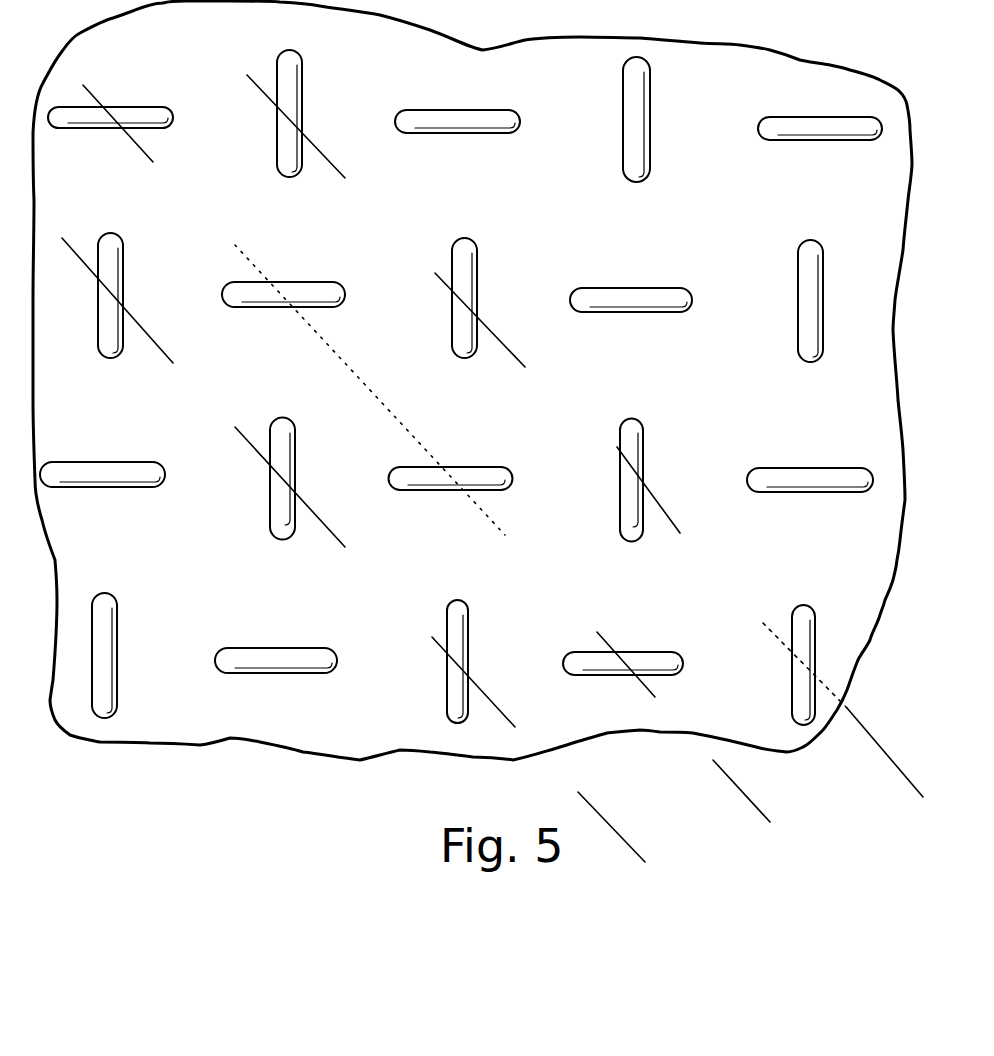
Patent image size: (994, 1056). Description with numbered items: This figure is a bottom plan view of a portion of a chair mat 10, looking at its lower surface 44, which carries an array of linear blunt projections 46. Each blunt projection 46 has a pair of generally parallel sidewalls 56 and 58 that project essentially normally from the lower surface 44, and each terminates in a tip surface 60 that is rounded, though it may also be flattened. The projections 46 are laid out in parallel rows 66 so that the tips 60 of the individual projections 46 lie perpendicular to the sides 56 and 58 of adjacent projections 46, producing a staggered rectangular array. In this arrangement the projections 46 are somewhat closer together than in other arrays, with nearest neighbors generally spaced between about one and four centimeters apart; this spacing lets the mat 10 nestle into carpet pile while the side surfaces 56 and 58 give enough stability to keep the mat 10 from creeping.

The chair mat 10 is at (472, 452).
The lower surface 44 is at (220, 230).
The blunt projections 46 is at (290, 84).
The sidewall 56 is at (277, 477).
The sidewall 58 is at (297, 478).
The tip surfaces 60 is at (465, 238).
The parallel rows 66 is at (743, 805).